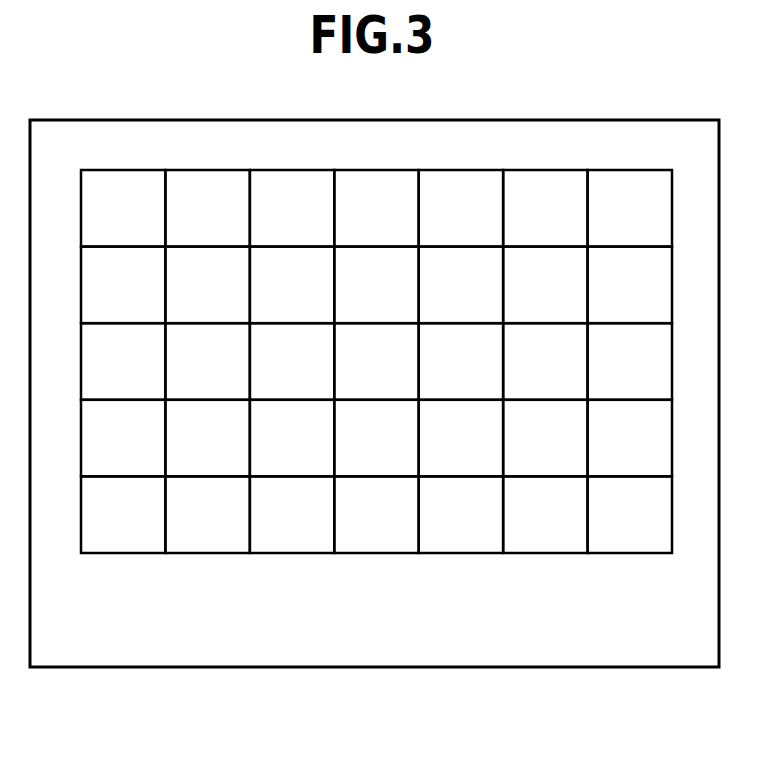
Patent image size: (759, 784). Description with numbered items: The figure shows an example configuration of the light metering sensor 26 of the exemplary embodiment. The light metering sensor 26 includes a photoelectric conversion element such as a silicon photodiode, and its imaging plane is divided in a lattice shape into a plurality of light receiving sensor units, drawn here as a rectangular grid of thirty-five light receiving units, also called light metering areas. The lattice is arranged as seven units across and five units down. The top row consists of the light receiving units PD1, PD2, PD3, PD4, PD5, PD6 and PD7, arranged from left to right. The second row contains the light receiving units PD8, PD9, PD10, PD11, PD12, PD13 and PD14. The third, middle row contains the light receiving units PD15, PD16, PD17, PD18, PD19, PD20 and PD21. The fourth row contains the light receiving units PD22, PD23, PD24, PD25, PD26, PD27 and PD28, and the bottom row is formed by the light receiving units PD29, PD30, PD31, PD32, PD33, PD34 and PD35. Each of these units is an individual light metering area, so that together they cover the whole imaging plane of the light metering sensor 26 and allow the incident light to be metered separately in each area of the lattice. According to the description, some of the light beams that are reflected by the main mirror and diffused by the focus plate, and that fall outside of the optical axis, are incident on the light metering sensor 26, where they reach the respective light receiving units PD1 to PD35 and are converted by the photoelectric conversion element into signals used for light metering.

The light metering sensor 26 is at (380, 656).
The light receiving unit PD1 is at (123, 208).
The light receiving unit PD2 is at (207, 208).
The light receiving unit PD3 is at (292, 208).
The light receiving unit PD4 is at (376, 208).
The light receiving unit PD5 is at (461, 208).
The light receiving unit PD6 is at (545, 208).
The light receiving unit PD7 is at (630, 208).
The light receiving unit PD8 is at (123, 285).
The light receiving unit PD9 is at (207, 285).
The light receiving unit PD10 is at (292, 285).
The light receiving unit PD11 is at (376, 285).
The light receiving unit PD12 is at (461, 285).
The light receiving unit PD13 is at (545, 285).
The light receiving unit PD14 is at (630, 285).
The light receiving unit PD15 is at (123, 361).
The light receiving unit PD16 is at (207, 361).
The light receiving unit PD17 is at (292, 361).
The light receiving unit PD18 is at (376, 361).
The light receiving unit PD19 is at (461, 361).
The light receiving unit PD20 is at (545, 361).
The light receiving unit PD21 is at (630, 361).
The light receiving unit PD22 is at (123, 438).
The light receiving unit PD23 is at (207, 438).
The light receiving unit PD24 is at (292, 438).
The light receiving unit PD25 is at (376, 438).
The light receiving unit PD26 is at (461, 438).
The light receiving unit PD27 is at (545, 438).
The light receiving unit PD28 is at (630, 438).
The light receiving unit PD29 is at (123, 514).
The light receiving unit PD30 is at (207, 514).
The light receiving unit PD31 is at (292, 514).
The light receiving unit PD32 is at (376, 514).
The light receiving unit PD33 is at (461, 514).
The light receiving unit PD34 is at (545, 514).
The light receiving unit PD35 is at (630, 514).